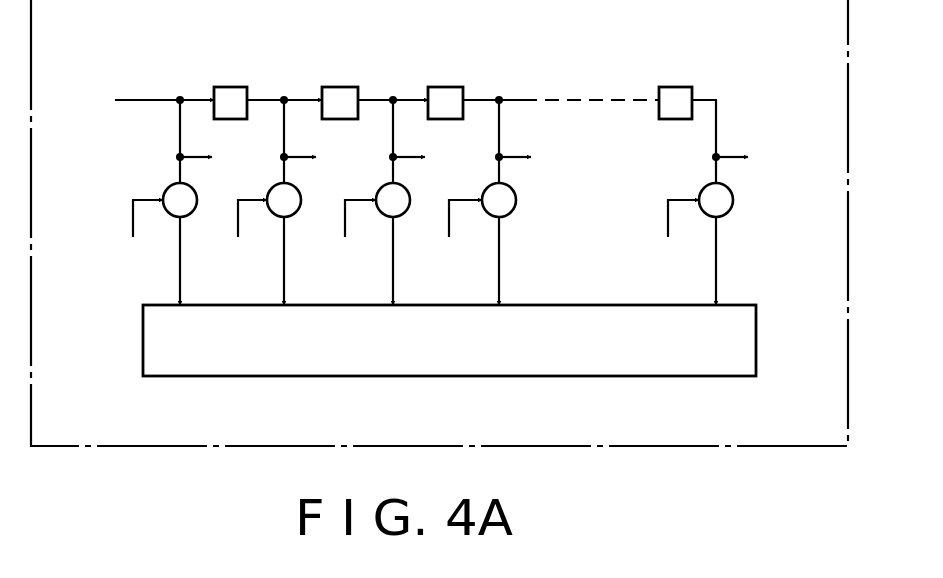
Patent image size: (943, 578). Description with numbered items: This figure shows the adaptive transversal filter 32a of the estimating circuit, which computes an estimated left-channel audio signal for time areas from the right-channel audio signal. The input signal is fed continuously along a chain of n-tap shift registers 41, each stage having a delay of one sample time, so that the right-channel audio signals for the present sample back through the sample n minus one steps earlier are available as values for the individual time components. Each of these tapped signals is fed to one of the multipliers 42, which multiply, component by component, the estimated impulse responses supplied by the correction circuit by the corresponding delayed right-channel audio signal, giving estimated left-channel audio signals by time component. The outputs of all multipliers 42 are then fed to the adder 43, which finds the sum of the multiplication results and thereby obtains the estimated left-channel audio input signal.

The adaptive transversal filter 32a is at (765, 431).
The shift registers 41 is at (670, 85).
The multipliers 42 is at (757, 222).
The adder 43 is at (660, 378).